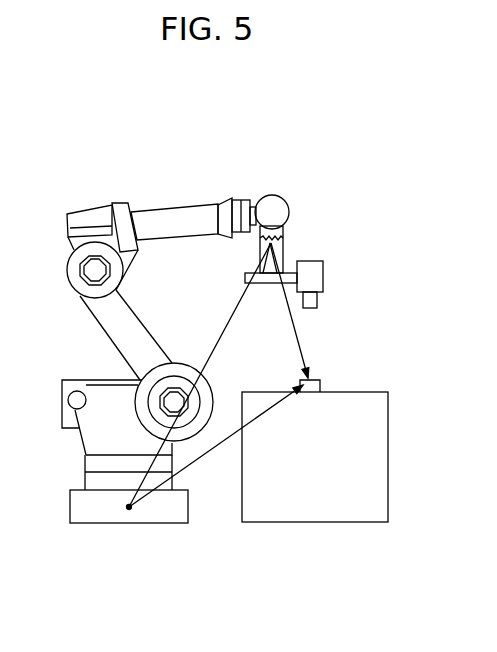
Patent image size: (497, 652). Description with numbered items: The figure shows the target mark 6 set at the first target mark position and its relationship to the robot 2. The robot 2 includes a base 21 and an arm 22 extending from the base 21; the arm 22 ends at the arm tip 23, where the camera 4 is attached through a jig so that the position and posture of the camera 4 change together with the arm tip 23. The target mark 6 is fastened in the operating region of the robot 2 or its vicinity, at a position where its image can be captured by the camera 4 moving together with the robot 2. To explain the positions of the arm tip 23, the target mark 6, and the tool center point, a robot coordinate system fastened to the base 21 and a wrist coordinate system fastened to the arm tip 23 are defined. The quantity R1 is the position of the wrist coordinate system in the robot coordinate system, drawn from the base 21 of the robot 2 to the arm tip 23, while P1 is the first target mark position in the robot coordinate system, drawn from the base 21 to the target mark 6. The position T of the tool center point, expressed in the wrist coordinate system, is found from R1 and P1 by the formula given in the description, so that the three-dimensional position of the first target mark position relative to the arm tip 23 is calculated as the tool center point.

The robot 2 is at (190, 344).
The arm 22 is at (180, 210).
The arm tip 23 is at (283, 240).
The base 21 is at (92, 524).
The camera 4 is at (323, 280).
The target mark 6 is at (320, 386).
The position of the wrist coordinate system R1 is at (200, 375).
The position of the tool center point T is at (296, 310).
The first target mark position P1 is at (216, 446).